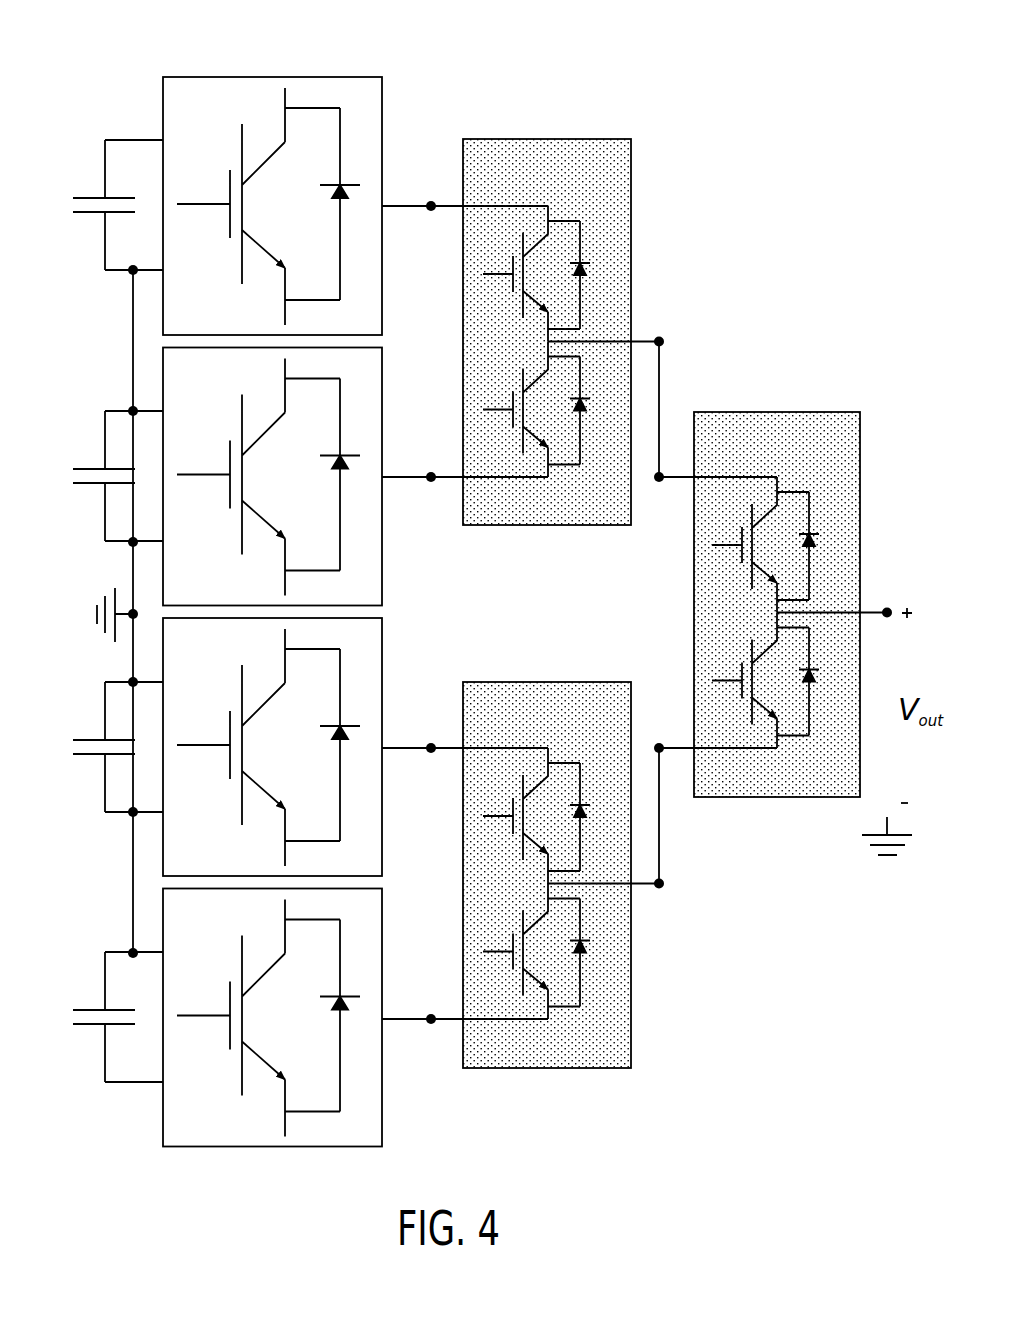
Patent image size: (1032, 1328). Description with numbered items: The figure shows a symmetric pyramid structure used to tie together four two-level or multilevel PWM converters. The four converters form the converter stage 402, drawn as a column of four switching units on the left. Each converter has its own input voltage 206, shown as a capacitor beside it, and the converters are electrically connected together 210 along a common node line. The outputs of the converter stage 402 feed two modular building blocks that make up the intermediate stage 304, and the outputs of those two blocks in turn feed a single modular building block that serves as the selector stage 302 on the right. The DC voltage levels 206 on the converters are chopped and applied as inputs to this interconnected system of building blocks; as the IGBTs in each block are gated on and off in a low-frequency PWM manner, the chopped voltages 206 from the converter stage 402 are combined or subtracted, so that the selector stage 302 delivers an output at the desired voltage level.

The input voltage 206 is at (88, 612).
The electrical connection 210 is at (130, 332).
The selector stage 302 is at (865, 68).
The intermediate stage 304 is at (630, 68).
The converter stage 402 is at (382, 68).